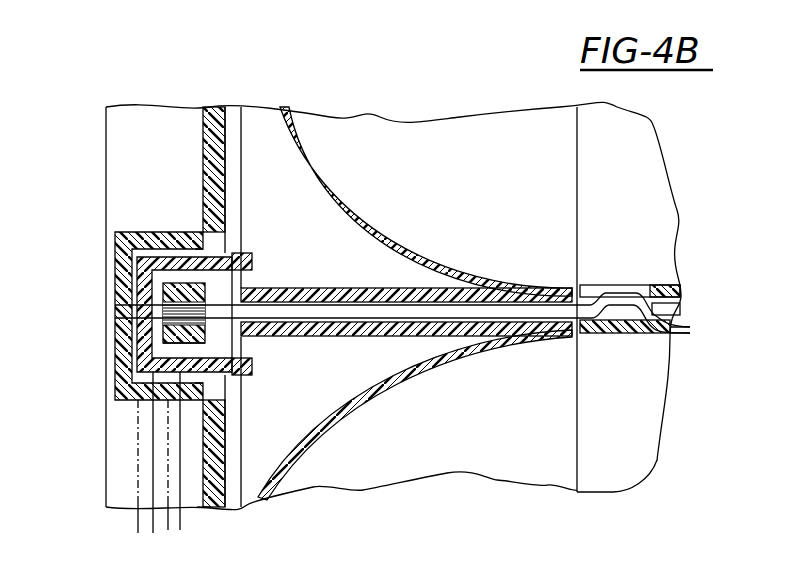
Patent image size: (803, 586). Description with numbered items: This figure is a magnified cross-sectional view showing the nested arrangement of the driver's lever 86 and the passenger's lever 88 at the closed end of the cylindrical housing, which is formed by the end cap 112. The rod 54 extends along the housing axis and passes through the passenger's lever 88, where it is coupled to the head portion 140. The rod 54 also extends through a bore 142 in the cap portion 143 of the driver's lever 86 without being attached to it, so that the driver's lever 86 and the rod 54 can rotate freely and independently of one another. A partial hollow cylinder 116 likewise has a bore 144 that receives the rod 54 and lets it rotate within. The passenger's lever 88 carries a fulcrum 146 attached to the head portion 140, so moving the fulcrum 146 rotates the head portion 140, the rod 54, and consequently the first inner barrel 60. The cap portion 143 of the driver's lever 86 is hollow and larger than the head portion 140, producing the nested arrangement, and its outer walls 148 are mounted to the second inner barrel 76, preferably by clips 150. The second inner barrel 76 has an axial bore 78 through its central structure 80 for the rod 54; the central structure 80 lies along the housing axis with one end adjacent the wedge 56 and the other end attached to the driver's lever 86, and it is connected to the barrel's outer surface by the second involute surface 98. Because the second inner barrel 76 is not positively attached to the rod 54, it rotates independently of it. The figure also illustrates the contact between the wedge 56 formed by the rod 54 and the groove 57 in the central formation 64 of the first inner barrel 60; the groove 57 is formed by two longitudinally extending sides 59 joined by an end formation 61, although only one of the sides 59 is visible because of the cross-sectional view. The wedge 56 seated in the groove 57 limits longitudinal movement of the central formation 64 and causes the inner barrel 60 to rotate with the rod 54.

The rod 54 is at (537, 312).
The wedge 56 is at (600, 290).
The groove 57 is at (655, 303).
The longitudinally extending sides 59 is at (622, 285).
The inner barrel 60 is at (667, 468).
The end formation 61 is at (673, 325).
The central formation 64 is at (638, 335).
The second inner barrel 76 is at (413, 116).
The axial bore 78 is at (282, 303).
The central structure 80 is at (330, 292).
The driver's lever 86 is at (128, 457).
The passenger's lever 88 is at (186, 467).
The second involute surface 98 is at (383, 227).
The end cap 112 is at (201, 110).
The partial hollow cylinder 116 is at (122, 245).
The head portion 140 is at (185, 287).
The bore 142 is at (143, 297).
The cap portion 143 is at (147, 347).
The bore 144 is at (115, 298).
The fulcrum 146 is at (177, 510).
The outer walls 148 is at (200, 247).
The clips 150 is at (257, 252).